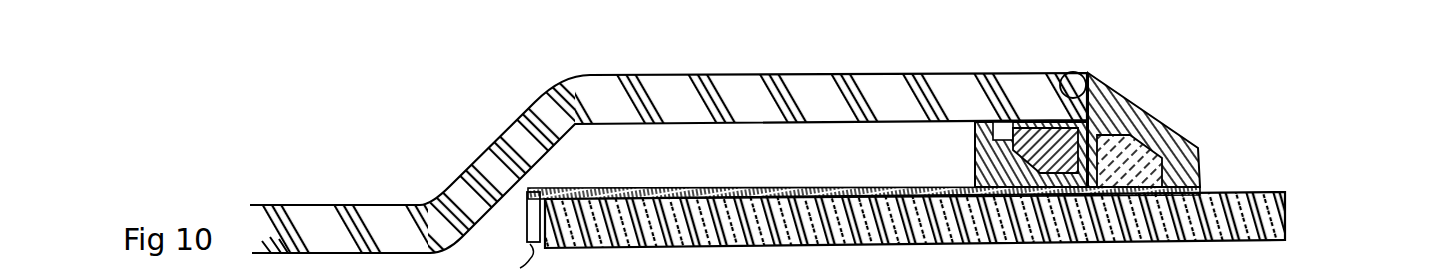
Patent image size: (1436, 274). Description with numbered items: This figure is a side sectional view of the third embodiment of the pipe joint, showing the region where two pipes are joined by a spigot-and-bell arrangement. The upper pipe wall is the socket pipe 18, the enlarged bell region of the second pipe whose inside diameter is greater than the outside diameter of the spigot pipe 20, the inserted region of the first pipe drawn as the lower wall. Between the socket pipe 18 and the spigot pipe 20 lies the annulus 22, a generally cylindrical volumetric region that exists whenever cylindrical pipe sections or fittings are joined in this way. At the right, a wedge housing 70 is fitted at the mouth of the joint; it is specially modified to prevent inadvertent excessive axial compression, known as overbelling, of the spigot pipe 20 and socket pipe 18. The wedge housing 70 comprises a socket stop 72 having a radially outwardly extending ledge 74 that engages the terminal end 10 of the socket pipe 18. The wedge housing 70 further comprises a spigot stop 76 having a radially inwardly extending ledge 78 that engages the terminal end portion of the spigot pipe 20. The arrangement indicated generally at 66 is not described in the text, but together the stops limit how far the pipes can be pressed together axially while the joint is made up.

The terminal end 10 is at (1062, 73).
The socket pipe 18 is at (663, 98).
The spigot pipe 20 is at (620, 240).
The annulus 22 is at (613, 157).
The clip assembly 66 is at (1185, 123).
The wedge housing 70 is at (1180, 140).
The socket stop 72 is at (1103, 97).
The radially outwardly extending ledge 74 is at (1108, 101).
The spigot stop 76 is at (728, 193).
The radially inwardly extending ledge 78 is at (527, 228).